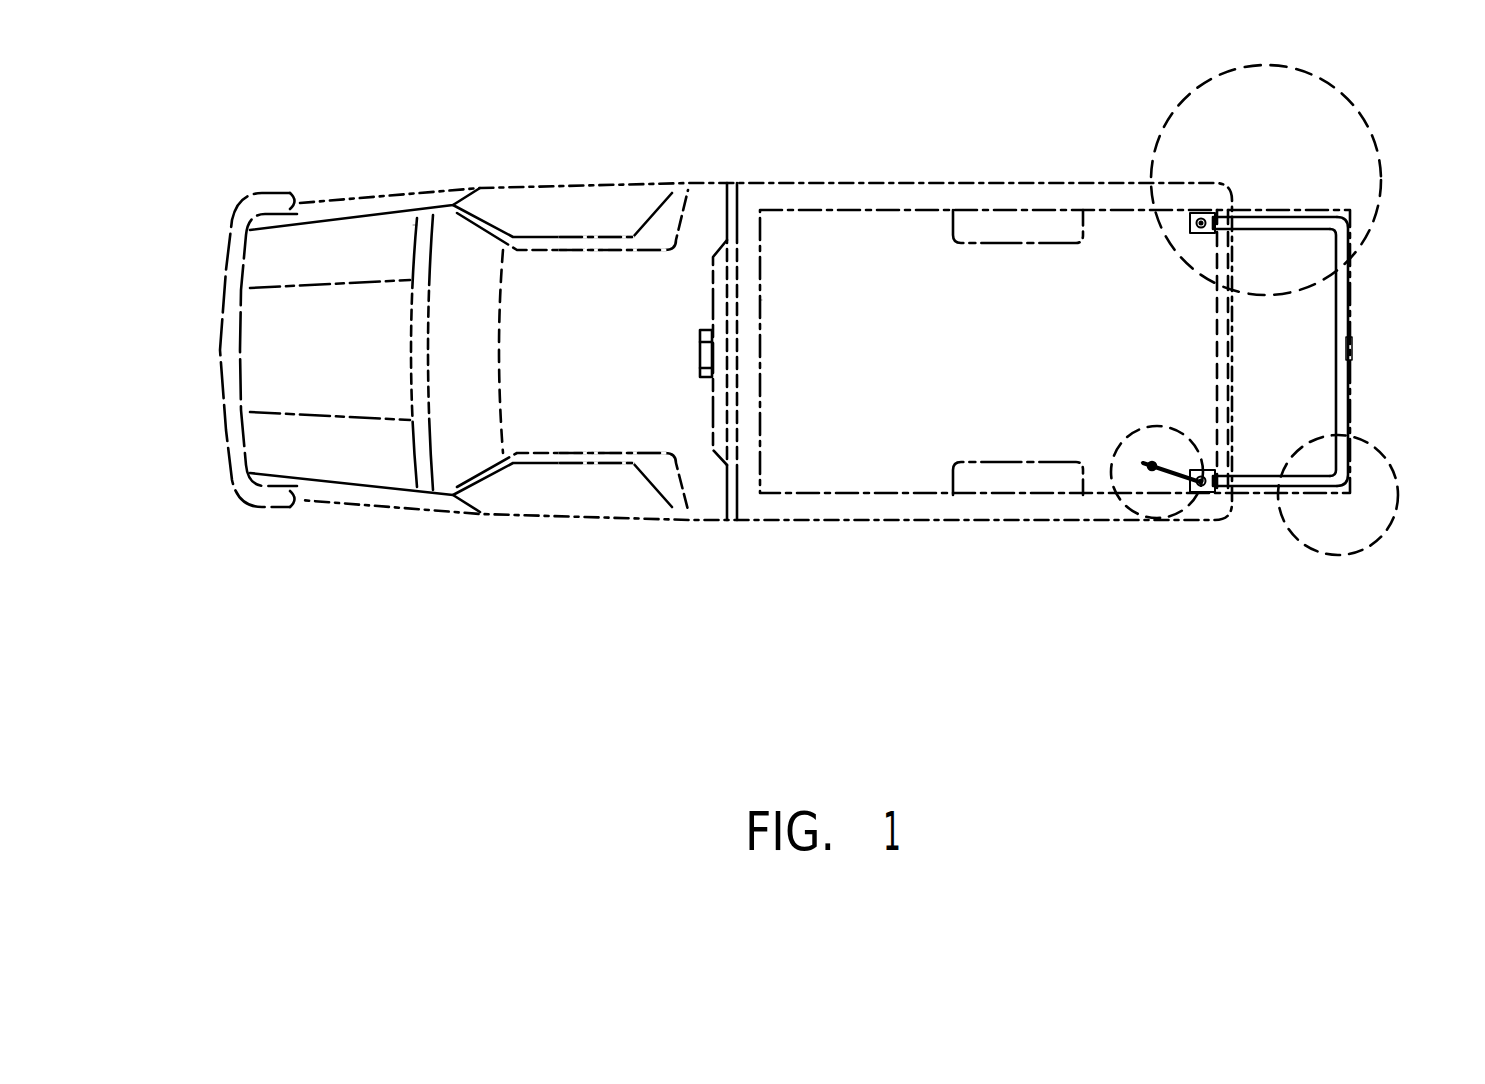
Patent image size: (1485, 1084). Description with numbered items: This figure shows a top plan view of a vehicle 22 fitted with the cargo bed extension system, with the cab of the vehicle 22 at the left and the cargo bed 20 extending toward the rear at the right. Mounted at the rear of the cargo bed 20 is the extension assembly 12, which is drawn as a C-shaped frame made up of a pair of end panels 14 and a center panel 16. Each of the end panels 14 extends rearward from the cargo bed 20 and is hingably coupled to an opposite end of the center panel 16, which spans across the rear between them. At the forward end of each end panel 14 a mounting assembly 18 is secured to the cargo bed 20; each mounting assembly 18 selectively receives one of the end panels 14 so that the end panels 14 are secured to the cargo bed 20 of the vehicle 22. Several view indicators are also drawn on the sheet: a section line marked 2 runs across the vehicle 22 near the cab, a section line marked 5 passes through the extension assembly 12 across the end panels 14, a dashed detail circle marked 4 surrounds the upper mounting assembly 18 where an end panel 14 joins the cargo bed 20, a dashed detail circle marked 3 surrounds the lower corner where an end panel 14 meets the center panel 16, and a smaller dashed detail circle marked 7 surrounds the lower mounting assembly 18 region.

The section line 2- 2 is at (189, 608).
The detail area of FIG. 3 is at (1297, 540).
The detail area of FIG. 4 is at (1168, 115).
The section line 5- 5 is at (1285, 323).
The detail area of FIG. 7 is at (1127, 507).
The extension assembly 12 is at (1308, 353).
The end panels 14 is at (1298, 217).
The center panel 16 is at (1345, 300).
The mounting assemblies 18 is at (1199, 213).
The cargo bed 20 is at (867, 300).
The vehicle 22 is at (357, 237).